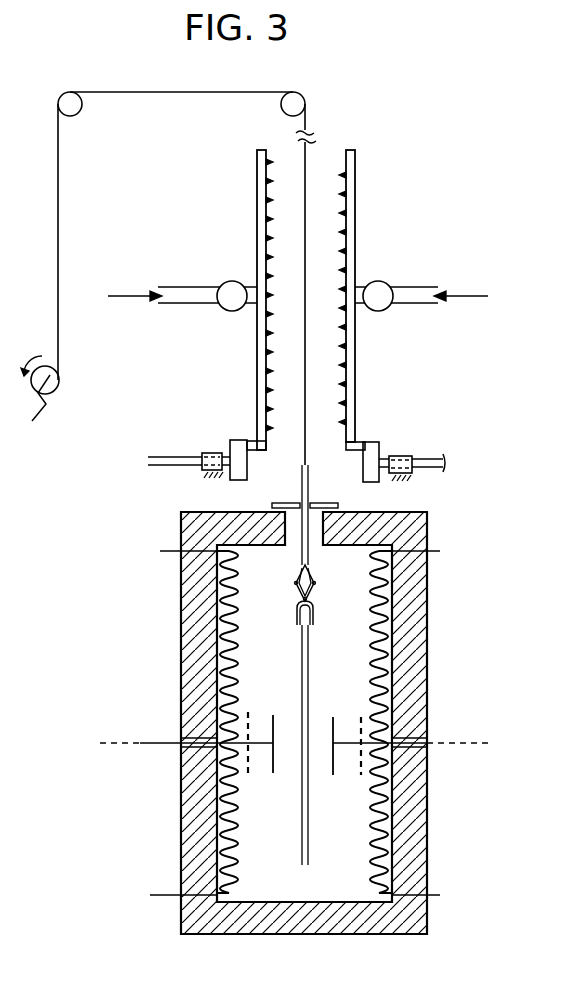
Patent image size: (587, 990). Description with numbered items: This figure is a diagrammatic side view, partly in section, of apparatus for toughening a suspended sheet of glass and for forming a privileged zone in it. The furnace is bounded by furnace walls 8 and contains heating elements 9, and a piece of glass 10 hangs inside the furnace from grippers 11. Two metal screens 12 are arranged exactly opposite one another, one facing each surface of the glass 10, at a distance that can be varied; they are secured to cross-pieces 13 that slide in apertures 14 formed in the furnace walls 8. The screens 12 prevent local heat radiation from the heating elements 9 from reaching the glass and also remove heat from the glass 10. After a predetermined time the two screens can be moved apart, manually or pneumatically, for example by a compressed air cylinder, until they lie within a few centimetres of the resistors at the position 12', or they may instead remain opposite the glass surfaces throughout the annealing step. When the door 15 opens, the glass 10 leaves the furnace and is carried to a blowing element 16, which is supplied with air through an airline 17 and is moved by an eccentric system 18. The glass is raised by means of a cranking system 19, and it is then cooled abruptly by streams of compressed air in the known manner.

The furnace walls 8 is at (421, 660).
The heating elements 9 is at (377, 686).
The piece of glass 10 is at (307, 665).
The grippers 11 is at (309, 577).
The metal screens 12 is at (307, 759).
The screen position 12' is at (287, 758).
The cross-pieces 13 is at (424, 747).
The apertures 14 is at (421, 738).
The door 15 is at (312, 503).
The blowing element 16 is at (262, 396).
The airline 17 is at (378, 296).
The eccentric system 18 is at (240, 447).
The cranking system 19 is at (61, 249).